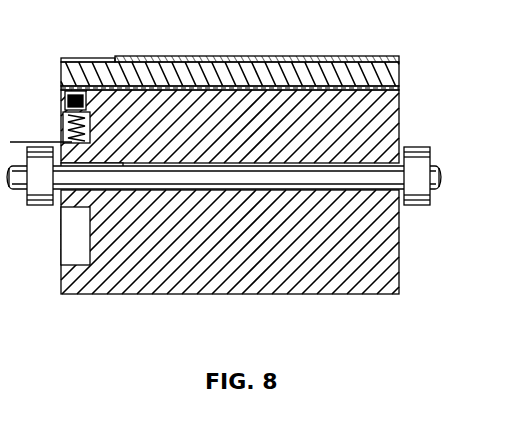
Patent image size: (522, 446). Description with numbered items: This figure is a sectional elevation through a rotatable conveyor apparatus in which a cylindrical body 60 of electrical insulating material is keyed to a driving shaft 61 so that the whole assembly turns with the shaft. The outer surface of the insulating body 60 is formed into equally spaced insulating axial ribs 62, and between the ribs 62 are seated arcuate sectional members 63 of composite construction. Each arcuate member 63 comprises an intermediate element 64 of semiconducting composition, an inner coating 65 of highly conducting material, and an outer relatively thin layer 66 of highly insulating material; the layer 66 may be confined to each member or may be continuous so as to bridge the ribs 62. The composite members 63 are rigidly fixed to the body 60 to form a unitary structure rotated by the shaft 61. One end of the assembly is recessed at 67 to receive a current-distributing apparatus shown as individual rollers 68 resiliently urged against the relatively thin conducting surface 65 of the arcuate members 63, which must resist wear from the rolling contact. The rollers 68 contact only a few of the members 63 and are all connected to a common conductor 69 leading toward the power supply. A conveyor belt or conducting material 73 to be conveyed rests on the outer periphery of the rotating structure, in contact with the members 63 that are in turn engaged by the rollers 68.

The cylindrical body 60 is at (391, 136).
The driving shaft 61 is at (16, 186).
The insulating axial ribs 62 is at (137, 287).
The arcuate sectional members 63 is at (62, 46).
The intermediate element 64 is at (394, 78).
The inner coating 65 is at (397, 88).
The outer relatively thin layer 66 is at (100, 58).
The recess 67 is at (70, 243).
The rollers 68 is at (66, 100).
The common conductor 69 is at (48, 142).
The conveyor belt or conducting material 73 is at (276, 57).